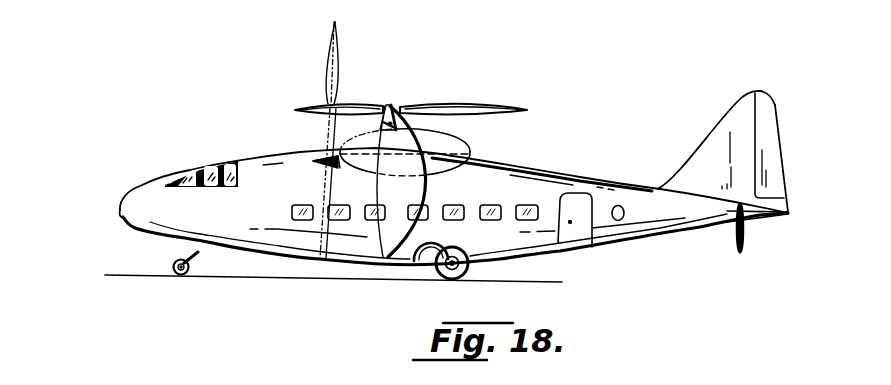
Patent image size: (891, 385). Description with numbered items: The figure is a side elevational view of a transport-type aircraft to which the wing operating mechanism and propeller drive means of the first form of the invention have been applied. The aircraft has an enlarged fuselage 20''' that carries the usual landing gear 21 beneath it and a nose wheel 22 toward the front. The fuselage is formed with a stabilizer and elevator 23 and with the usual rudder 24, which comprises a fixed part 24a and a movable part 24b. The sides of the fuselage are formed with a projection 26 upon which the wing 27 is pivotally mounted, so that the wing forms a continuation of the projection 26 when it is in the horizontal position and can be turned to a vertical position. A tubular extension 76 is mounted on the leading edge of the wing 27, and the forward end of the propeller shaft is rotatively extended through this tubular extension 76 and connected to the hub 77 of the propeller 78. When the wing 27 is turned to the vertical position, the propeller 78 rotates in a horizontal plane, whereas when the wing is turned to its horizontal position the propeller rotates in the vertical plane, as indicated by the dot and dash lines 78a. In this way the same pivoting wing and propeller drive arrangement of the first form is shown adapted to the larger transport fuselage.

The enlarged fuselage 20''' is at (455, 242).
The landing gear 21 is at (452, 279).
The nose wheel 22 is at (180, 275).
The stabilizer and elevator 23 is at (742, 243).
The rudder 24 is at (742, 151).
The fixed part of rudder 24a is at (723, 138).
The movable part of rudder 24b is at (775, 180).
The projection 26 is at (462, 158).
The wing 27 is at (400, 220).
The tubular extension 76 is at (395, 124).
The hub 77 is at (387, 106).
The propeller 78 is at (460, 108).
The dot and dash lines 78a is at (332, 78).